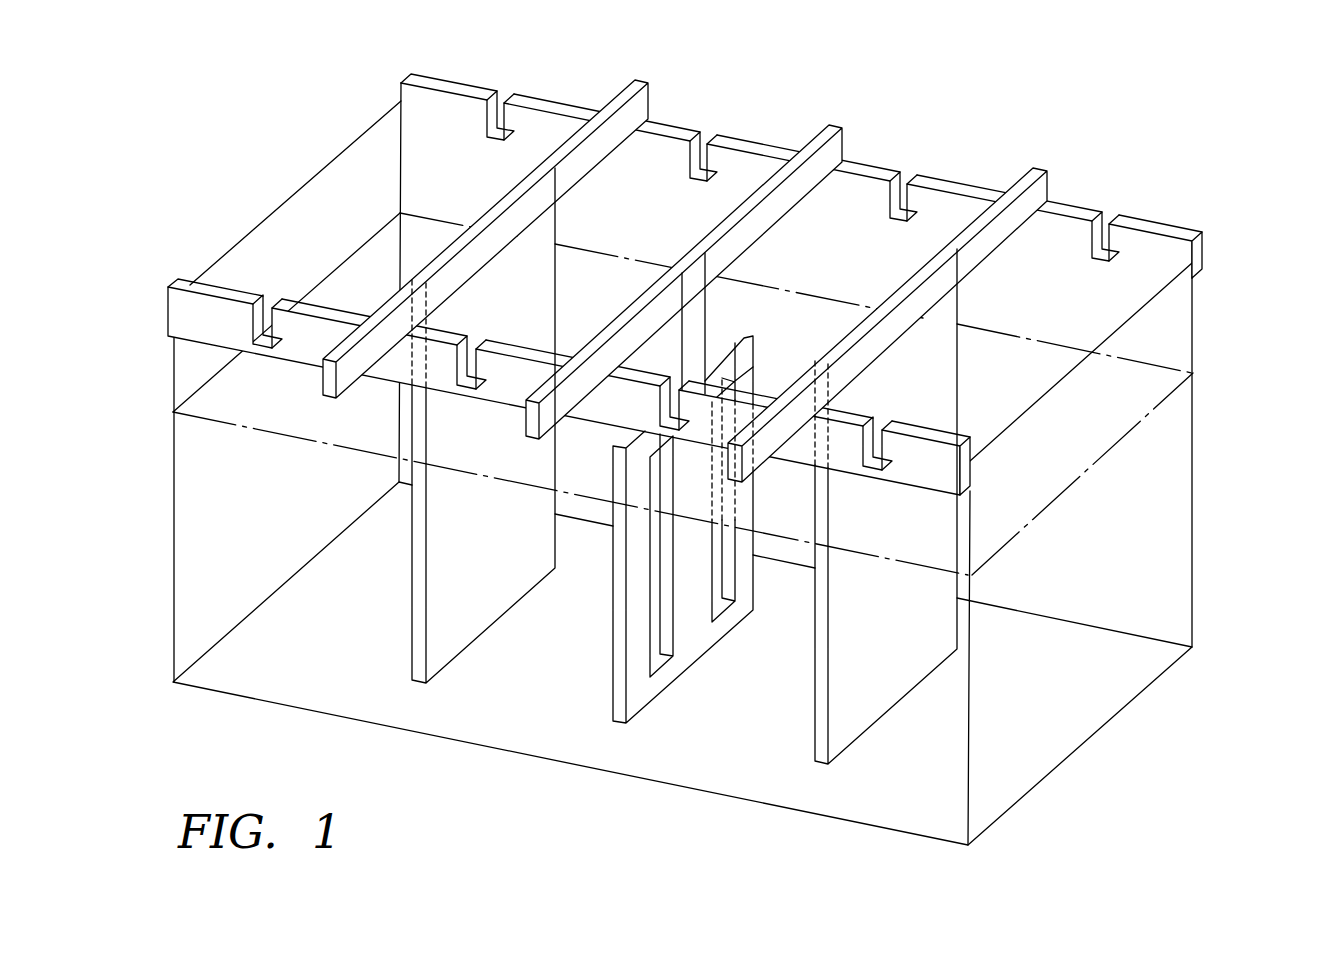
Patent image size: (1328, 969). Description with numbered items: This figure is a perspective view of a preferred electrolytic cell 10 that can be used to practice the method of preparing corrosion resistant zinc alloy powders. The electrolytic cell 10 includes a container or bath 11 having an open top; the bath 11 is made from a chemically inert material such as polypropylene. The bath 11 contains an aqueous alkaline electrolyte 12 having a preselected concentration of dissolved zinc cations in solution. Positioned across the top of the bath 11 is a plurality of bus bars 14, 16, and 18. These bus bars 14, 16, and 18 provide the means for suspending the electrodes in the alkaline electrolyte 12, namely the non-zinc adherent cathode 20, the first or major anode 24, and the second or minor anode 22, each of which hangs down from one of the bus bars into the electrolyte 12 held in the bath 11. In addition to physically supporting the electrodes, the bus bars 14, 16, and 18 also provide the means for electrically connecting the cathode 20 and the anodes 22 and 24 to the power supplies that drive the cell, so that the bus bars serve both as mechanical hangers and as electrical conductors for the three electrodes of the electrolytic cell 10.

The electrolytic cell 10 is at (742, 438).
The container or bath 11 is at (1168, 498).
The aqueous alkaline electrolyte 12 is at (290, 440).
The bus bar 14 is at (640, 80).
The bus bar 16 is at (836, 118).
The bus bar 18 is at (1038, 163).
The non-zinc adherent cathode 20 is at (410, 630).
The second or minor anode 22 is at (612, 680).
The first or major anode 24 is at (815, 707).